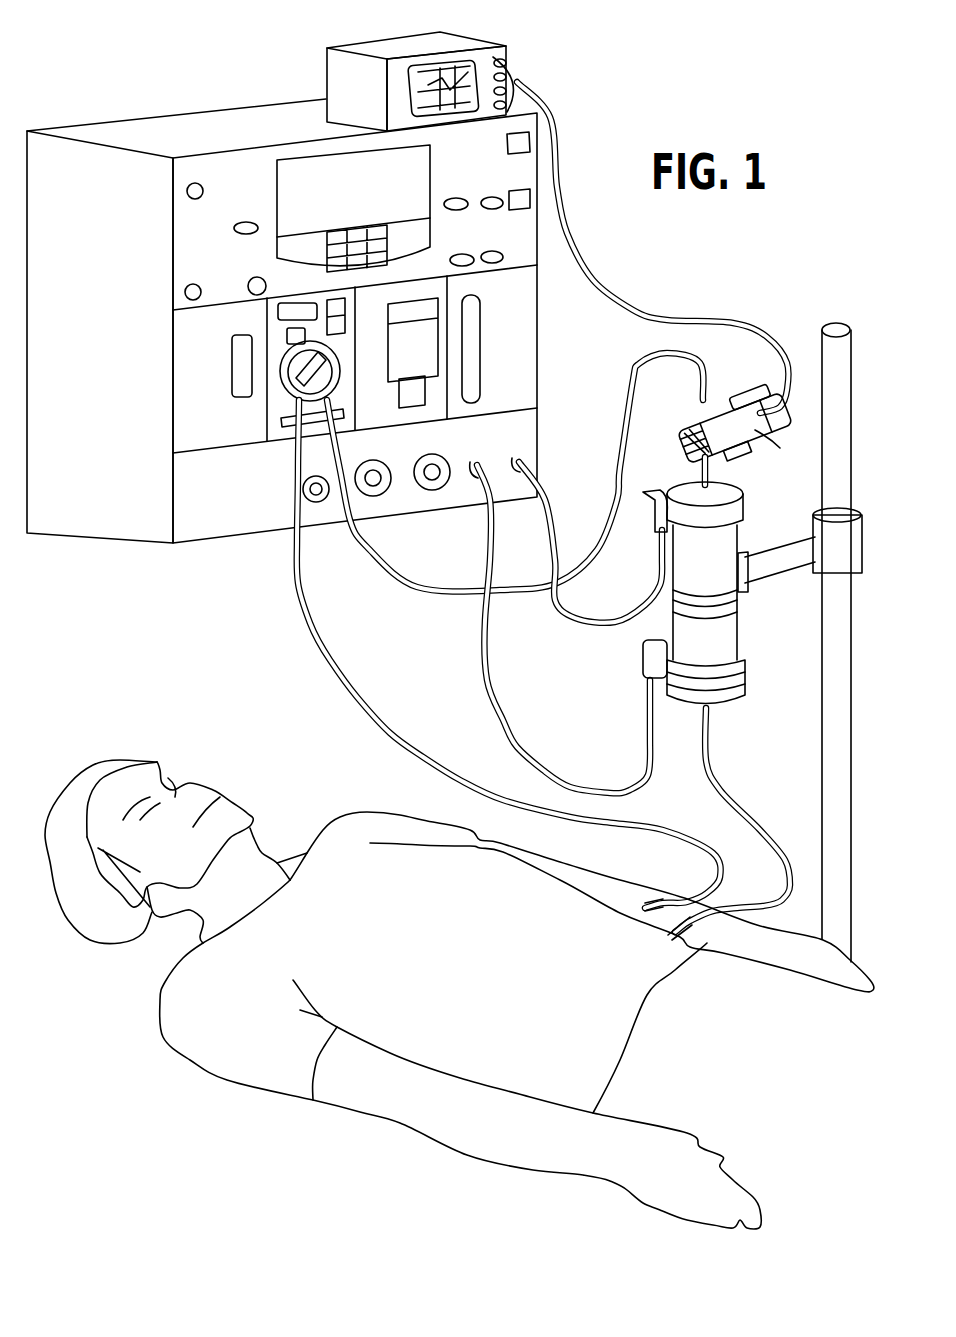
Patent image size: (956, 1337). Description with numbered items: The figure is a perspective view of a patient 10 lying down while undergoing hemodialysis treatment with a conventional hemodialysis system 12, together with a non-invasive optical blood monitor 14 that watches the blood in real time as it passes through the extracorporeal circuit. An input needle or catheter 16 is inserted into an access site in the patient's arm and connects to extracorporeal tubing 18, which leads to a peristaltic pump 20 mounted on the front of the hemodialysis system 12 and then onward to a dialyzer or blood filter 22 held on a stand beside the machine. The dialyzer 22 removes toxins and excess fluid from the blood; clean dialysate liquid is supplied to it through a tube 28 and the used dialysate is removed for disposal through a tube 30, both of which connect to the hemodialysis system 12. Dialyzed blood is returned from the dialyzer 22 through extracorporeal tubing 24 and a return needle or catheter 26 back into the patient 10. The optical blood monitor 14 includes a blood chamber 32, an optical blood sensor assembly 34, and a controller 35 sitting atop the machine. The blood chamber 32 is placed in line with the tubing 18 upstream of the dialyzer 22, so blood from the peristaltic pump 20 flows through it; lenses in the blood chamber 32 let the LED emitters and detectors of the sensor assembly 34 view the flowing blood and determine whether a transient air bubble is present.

The patient 10 is at (145, 1052).
The hemodialysis system 12 is at (103, 104).
The optical blood monitor 14 is at (520, 42).
The input needle or catheter 16 is at (677, 897).
The extracorporeal tubing 18 is at (296, 613).
The peristaltic pump 20 is at (281, 385).
The dialyzer or blood filter 22 is at (747, 547).
The extracorporeal tubing 24 is at (727, 790).
The return needle or catheter 26 is at (683, 930).
The tube 28 is at (510, 723).
The tube 30 is at (562, 500).
The blood chamber 32 is at (717, 402).
The optical blood sensor assembly 34 is at (773, 420).
The controller 35 is at (410, 46).